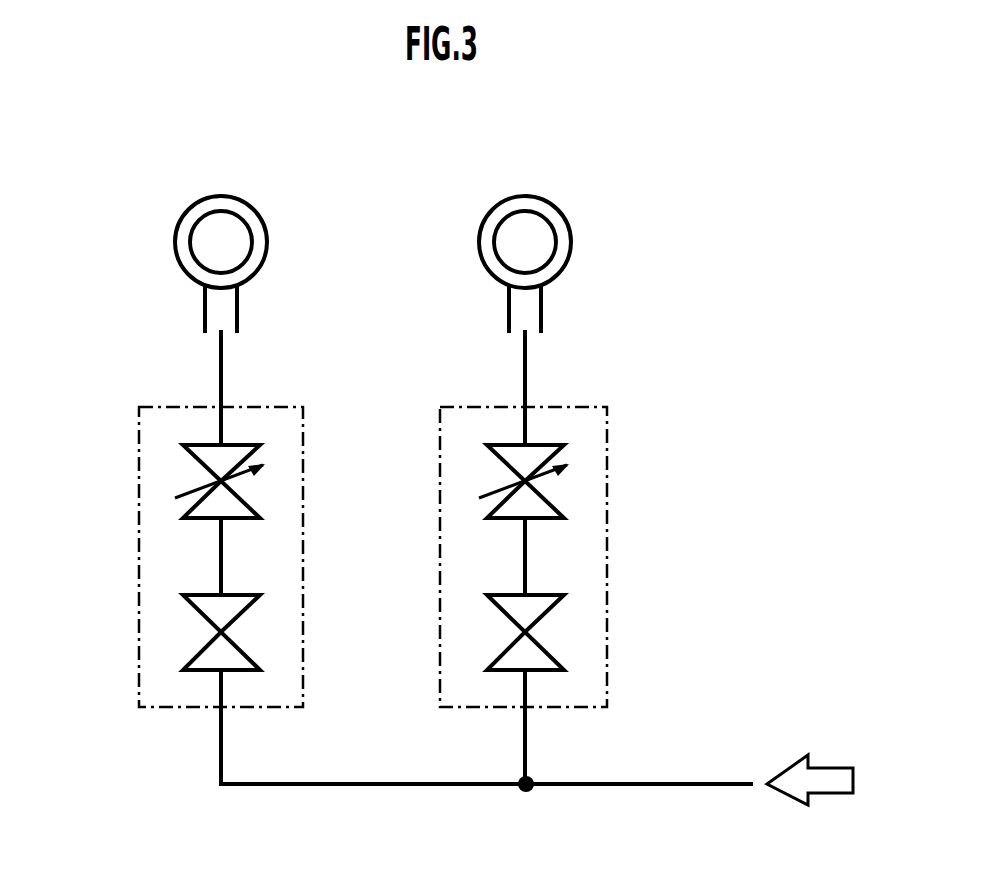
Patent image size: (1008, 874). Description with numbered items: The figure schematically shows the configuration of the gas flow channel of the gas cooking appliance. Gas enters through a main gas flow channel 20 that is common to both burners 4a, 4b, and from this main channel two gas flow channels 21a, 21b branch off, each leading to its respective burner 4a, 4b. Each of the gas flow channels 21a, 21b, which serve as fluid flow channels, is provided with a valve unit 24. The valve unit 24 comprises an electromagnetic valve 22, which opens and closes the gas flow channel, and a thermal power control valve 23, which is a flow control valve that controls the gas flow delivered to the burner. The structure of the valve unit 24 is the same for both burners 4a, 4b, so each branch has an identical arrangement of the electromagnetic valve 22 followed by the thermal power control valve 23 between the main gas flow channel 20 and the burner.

The burner 4a is at (250, 199).
The burner 4b is at (558, 210).
The main gas flow channel 20 is at (605, 787).
The gas flow channel 21a is at (223, 760).
The gas flow channel 21b is at (526, 760).
The electromagnetic valve 22 is at (200, 650).
The thermal power control valve 23 is at (258, 500).
The valve unit 24 is at (139, 500).